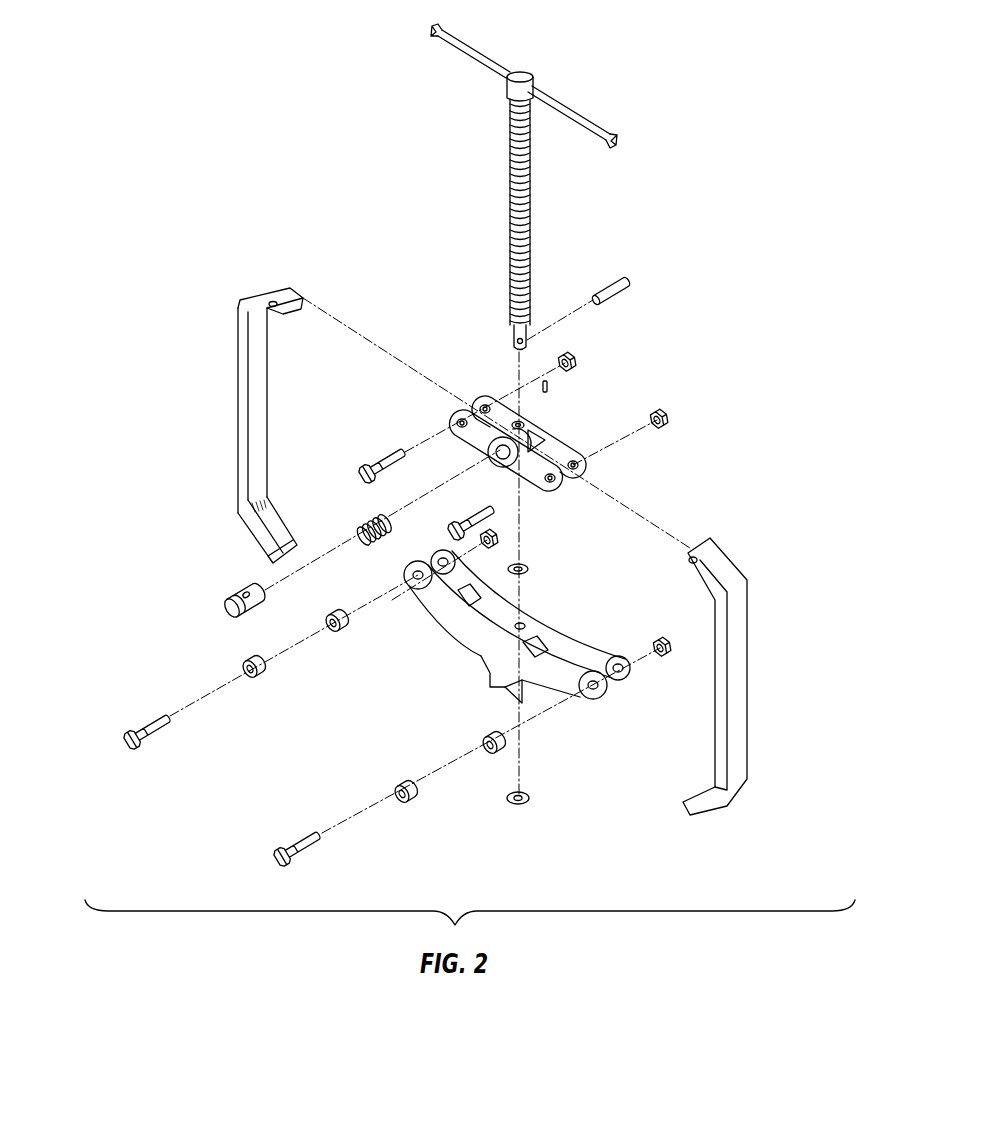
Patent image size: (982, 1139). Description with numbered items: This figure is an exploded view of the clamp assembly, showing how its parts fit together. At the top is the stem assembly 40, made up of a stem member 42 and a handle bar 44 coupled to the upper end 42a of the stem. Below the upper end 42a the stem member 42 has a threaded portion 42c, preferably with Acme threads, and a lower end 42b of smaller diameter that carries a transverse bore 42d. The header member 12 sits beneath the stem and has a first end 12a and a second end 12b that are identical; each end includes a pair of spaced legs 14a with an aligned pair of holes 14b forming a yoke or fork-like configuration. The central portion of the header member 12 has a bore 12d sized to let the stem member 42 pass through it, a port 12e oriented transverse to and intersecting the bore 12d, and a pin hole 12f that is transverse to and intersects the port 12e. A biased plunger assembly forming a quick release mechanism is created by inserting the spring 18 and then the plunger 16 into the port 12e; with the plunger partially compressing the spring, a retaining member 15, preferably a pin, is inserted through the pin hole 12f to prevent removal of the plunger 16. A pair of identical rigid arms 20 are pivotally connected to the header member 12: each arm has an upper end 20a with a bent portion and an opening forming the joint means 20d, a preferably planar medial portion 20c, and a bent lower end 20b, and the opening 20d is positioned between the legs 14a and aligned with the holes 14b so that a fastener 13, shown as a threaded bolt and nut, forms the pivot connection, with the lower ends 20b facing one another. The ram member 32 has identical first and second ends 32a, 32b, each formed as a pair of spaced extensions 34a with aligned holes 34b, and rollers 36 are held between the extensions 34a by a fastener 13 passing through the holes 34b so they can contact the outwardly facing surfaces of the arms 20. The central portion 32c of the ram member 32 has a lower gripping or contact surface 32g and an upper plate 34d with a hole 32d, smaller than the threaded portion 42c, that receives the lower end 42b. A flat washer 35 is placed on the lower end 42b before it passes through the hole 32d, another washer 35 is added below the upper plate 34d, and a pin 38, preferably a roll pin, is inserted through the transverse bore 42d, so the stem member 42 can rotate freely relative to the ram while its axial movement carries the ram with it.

The header member 12 is at (562, 440).
The first end 12a is at (455, 428).
The second end 12b is at (597, 465).
The bore 12d is at (515, 420).
The port 12e is at (495, 452).
The pin hole 12f is at (537, 430).
The fastener 13 is at (375, 470).
The spaced legs 14a is at (468, 410).
The holes 14b is at (585, 478).
The retaining member 15 is at (549, 388).
The plunger 16 is at (228, 604).
The biasing member 18 is at (368, 522).
The rigid arms 20 is at (238, 472).
The upper end 20a is at (272, 292).
The lower end 20b is at (257, 536).
The medial portion 20c is at (255, 413).
The joint means 20d is at (240, 310).
The ram member 32 is at (462, 628).
The first end 32a is at (417, 582).
The second end 32b is at (592, 700).
The central portion 32c is at (490, 677).
The hole 32d is at (523, 622).
The lower gripping or contact surface 32g is at (505, 692).
The spaced extensions 34a is at (618, 688).
The holes 34b is at (595, 672).
The upper plate 34d is at (530, 636).
The flat washer 35 is at (522, 565).
The rollers 36 is at (400, 787).
The pin 38 is at (617, 283).
The stem assembly 40 is at (519, 61).
The stem member 42 is at (532, 180).
The upper end 42a is at (513, 88).
The lower end 42b is at (513, 336).
The threaded portion 42c is at (510, 218).
The transverse bore 42d is at (532, 343).
The handle bar 44 is at (566, 107).